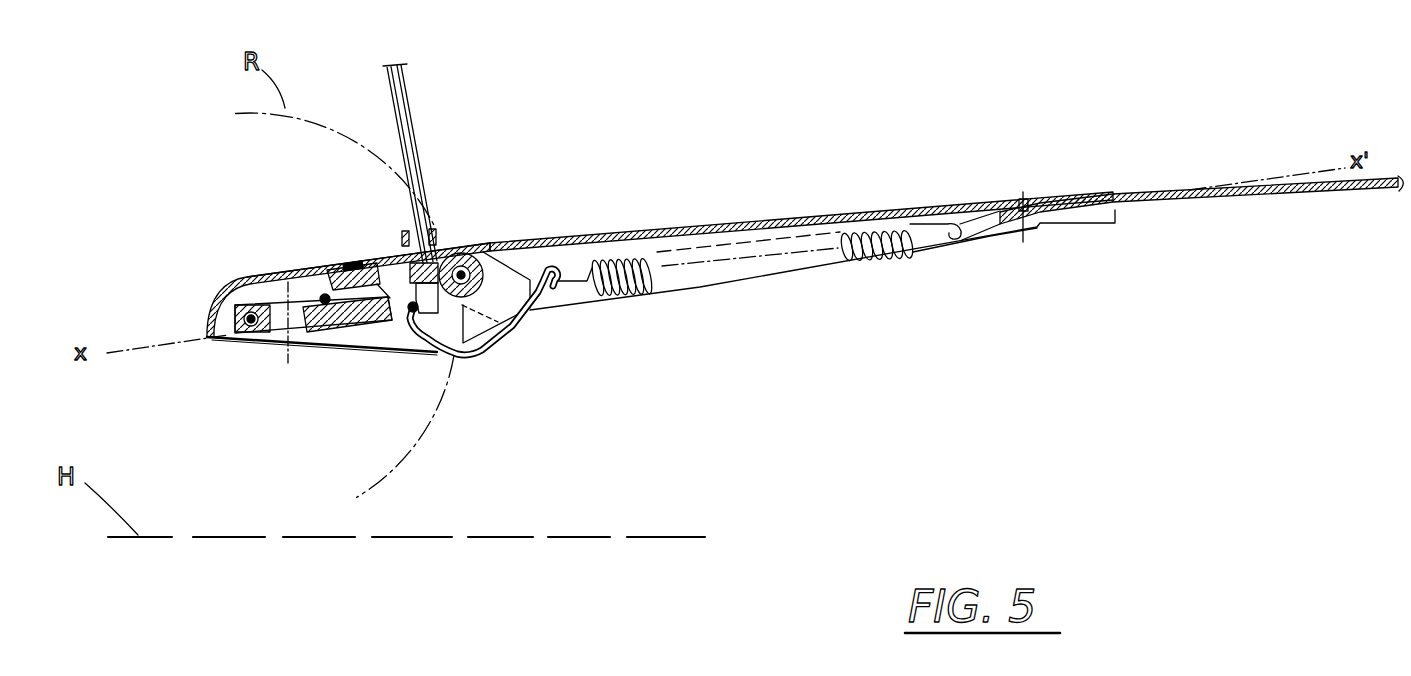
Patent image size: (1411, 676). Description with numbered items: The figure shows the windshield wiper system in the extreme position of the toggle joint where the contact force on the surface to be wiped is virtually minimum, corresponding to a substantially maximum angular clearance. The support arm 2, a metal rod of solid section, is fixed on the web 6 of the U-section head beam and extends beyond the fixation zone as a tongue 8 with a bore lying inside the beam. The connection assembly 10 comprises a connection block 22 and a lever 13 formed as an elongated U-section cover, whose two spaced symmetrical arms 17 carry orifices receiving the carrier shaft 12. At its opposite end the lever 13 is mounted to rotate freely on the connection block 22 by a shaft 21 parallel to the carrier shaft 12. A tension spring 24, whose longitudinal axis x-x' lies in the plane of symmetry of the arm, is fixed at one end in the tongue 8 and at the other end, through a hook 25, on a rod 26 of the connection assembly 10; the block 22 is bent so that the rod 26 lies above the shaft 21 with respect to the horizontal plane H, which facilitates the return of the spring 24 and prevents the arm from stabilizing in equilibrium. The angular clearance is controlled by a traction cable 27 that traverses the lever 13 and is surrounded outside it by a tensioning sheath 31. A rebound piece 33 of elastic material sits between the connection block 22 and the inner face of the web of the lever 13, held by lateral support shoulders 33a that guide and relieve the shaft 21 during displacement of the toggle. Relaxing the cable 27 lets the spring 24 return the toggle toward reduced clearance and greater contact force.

The support arm 2 is at (1223, 203).
The web 6 is at (764, 222).
The tongue 8 is at (990, 232).
The connection assembly 10 is at (223, 215).
The carrier shaft 12 is at (468, 250).
The lever 13 is at (223, 279).
The symmetrical arms 17 is at (502, 300).
The shaft 21 is at (247, 340).
The connection block 22 is at (327, 340).
The tension spring 24 is at (862, 260).
The hook 25 is at (485, 355).
The rod 26 is at (410, 318).
The traction cable 27 is at (410, 147).
The tensioning sheath 31 is at (405, 82).
The rebound piece 33 is at (327, 265).
The lateral support shoulders 33a is at (352, 258).